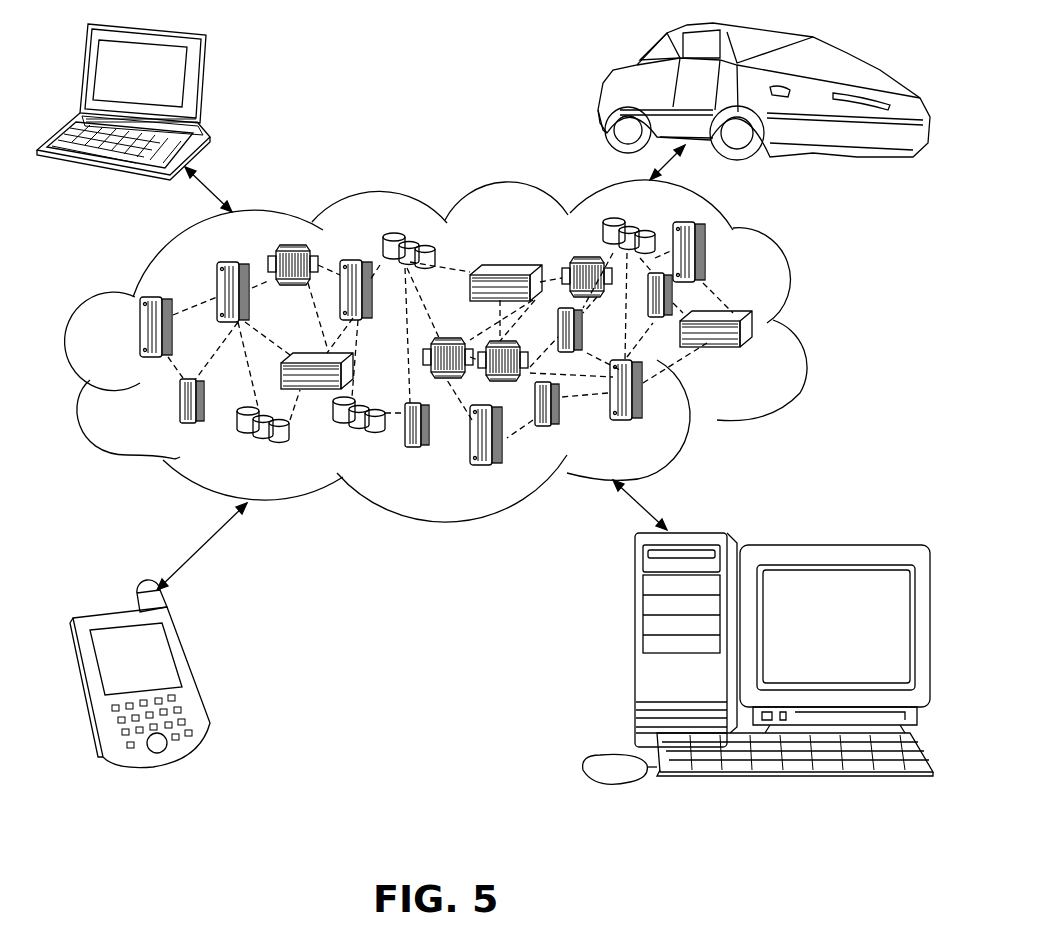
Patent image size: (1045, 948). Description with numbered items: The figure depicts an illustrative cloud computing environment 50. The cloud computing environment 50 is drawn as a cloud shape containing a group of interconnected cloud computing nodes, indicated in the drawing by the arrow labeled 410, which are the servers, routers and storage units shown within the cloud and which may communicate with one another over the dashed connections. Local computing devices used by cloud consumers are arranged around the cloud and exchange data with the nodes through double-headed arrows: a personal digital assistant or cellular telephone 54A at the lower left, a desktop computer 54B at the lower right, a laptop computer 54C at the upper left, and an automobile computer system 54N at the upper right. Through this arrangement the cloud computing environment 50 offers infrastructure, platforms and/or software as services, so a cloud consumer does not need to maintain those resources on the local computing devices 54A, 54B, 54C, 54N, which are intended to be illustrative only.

The cloud computing environment 50 is at (797, 288).
The cloud computing nodes 410 is at (780, 352).
The personal digital assistant (PDA) or cellular telephone 54A is at (193, 672).
The desktop computer 54B is at (633, 650).
The laptop computer 54C is at (203, 75).
The automobile computer system 54N is at (610, 87).